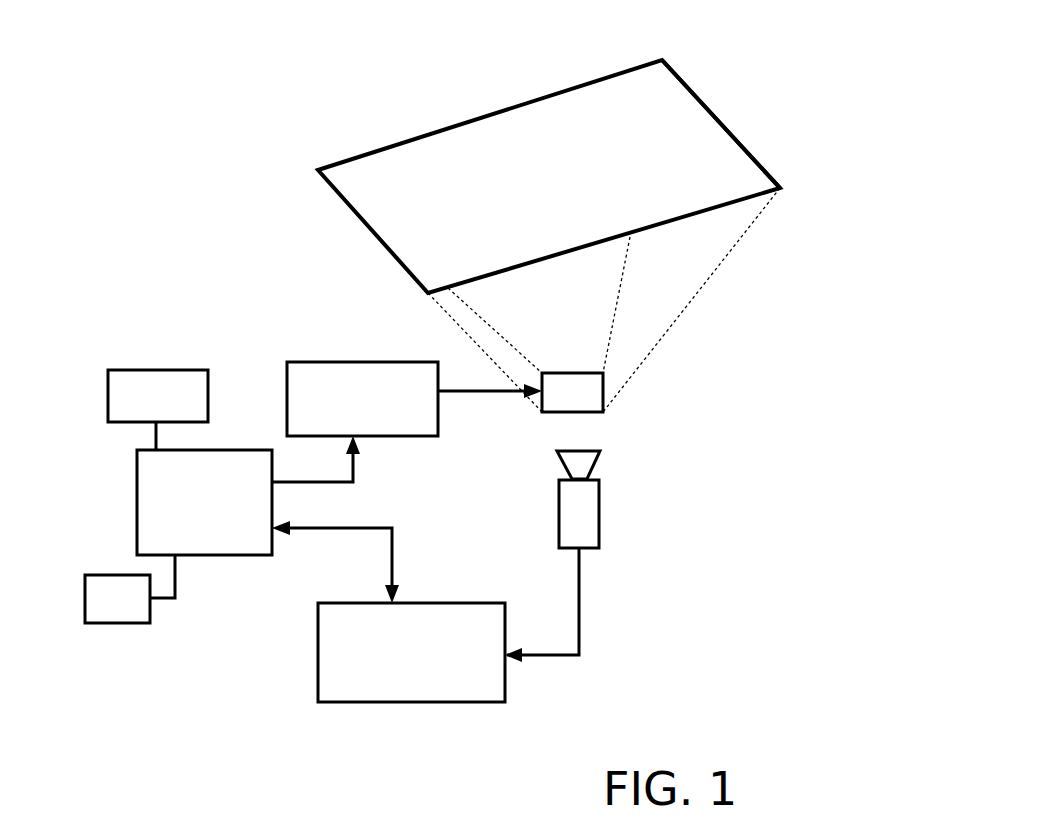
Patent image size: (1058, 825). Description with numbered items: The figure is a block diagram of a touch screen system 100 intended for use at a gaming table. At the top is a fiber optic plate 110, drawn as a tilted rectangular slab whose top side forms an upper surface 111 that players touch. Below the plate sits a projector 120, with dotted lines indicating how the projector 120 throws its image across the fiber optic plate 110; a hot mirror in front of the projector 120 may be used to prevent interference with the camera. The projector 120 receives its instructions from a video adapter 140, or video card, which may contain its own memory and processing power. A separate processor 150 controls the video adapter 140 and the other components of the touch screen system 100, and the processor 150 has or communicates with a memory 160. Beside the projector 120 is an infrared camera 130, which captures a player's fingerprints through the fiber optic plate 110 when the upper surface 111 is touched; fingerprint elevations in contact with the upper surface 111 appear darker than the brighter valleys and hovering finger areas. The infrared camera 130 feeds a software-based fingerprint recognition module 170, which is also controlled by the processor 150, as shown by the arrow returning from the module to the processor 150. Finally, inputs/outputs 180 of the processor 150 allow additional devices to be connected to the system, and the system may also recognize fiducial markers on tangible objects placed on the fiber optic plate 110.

The touch screen system 100 is at (108, 102).
The fiber optic plate 110 is at (454, 88).
The upper surface 111 is at (712, 135).
The projector 120 is at (597, 397).
The infrared camera 130 is at (592, 520).
The video adapter 140 is at (322, 371).
The processor 150 is at (223, 548).
The memory 160 is at (147, 378).
The fingerprint recognition module 170 is at (407, 693).
The inputs/outputs 180 is at (109, 616).